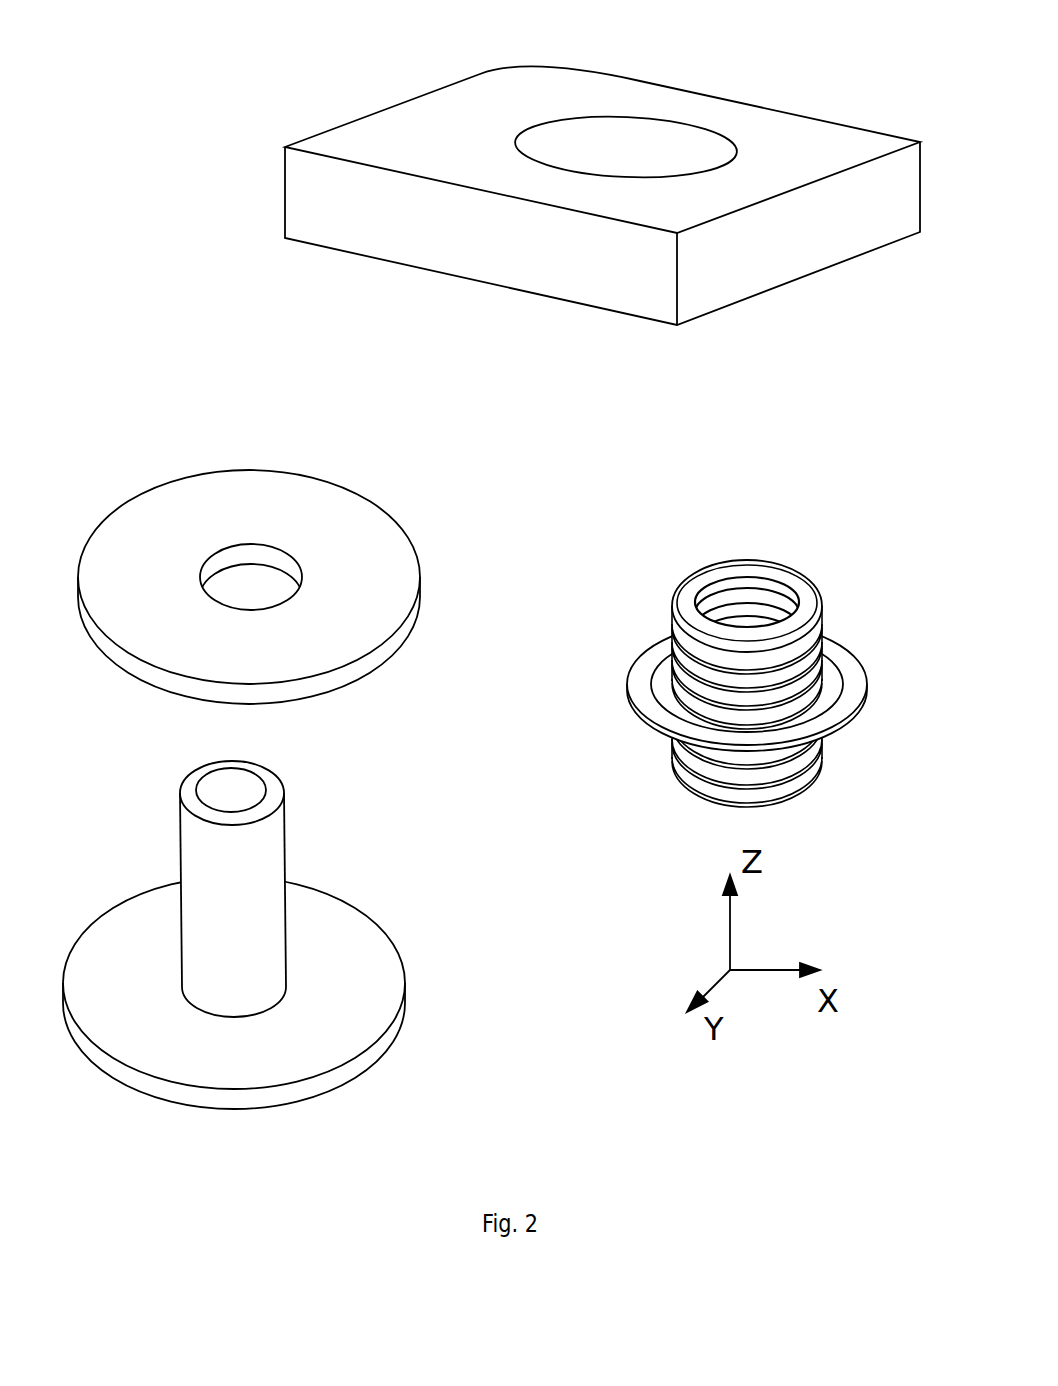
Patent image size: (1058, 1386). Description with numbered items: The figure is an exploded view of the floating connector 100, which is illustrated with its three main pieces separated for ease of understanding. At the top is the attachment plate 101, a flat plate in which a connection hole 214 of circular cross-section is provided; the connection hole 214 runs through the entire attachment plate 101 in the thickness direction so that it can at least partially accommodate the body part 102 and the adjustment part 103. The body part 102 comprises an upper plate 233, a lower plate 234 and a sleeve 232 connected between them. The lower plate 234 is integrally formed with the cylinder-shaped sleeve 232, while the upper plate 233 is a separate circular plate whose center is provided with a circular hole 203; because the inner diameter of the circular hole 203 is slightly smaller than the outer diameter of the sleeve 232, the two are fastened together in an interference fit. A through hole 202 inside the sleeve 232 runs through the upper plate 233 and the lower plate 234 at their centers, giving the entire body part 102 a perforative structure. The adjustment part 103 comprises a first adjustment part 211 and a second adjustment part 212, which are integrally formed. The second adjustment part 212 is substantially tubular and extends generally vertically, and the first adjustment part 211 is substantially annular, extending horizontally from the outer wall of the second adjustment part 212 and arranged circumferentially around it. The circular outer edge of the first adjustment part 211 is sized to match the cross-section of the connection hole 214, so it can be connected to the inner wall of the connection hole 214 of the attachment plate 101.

The floating connector 100 is at (168, 235).
The attachment plate 101 is at (497, 77).
The connection hole 214 is at (530, 138).
The upper plate 233 is at (415, 570).
The circular hole 203 is at (273, 577).
The body part 102 is at (415, 804).
The through hole 202 is at (238, 782).
The sleeve 232 is at (185, 855).
The lower plate 234 is at (393, 1028).
The adjustment part 103 is at (820, 565).
The second adjustment part 212 is at (707, 574).
The first adjustment part 211 is at (862, 686).